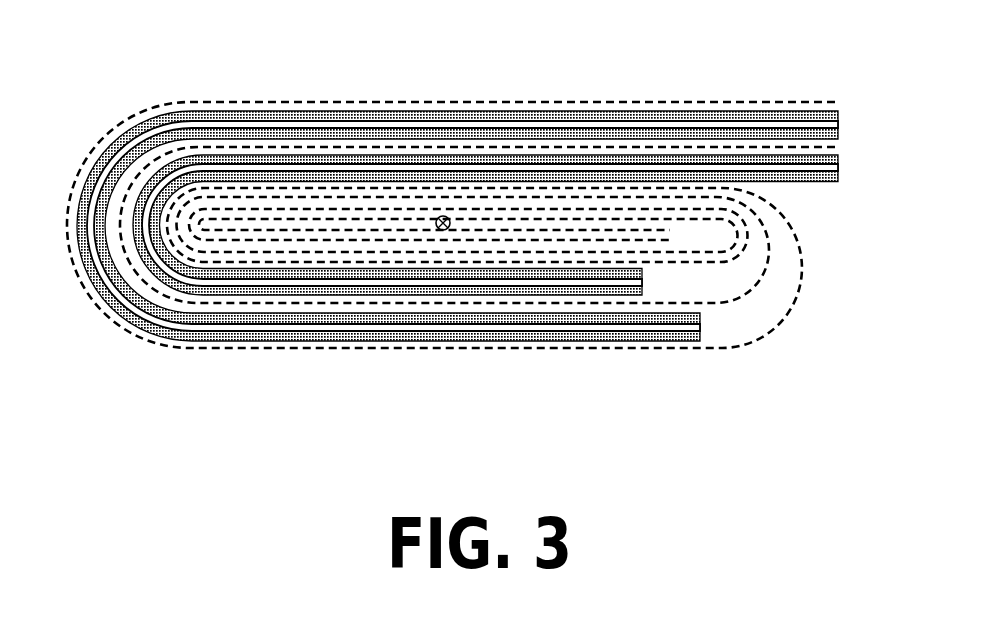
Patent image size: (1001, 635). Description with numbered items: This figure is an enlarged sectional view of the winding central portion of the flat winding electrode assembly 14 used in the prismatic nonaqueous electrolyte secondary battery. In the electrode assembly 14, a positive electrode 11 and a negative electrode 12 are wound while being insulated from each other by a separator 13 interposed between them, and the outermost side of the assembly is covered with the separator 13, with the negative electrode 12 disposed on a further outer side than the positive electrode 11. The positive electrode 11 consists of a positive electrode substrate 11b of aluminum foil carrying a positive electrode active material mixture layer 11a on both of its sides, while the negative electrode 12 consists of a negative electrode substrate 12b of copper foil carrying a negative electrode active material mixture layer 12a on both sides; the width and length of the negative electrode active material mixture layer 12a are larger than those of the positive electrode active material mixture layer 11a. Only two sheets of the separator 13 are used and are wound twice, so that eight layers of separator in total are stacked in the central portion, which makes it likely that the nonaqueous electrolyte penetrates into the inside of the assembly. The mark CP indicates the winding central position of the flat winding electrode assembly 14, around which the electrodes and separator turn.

The flat winding electrode assembly 14 is at (55, 57).
The positive electrode 11 is at (485, 169).
The positive electrode active material mixture layer 11a is at (352, 162).
The positive electrode substrate 11b is at (417, 168).
The negative electrode 12 is at (457, 260).
The negative electrode active material mixture layer 12a is at (487, 333).
The negative electrode substrate 12b is at (562, 327).
The separator 13 is at (688, 102).
The winding central position CP is at (437, 229).